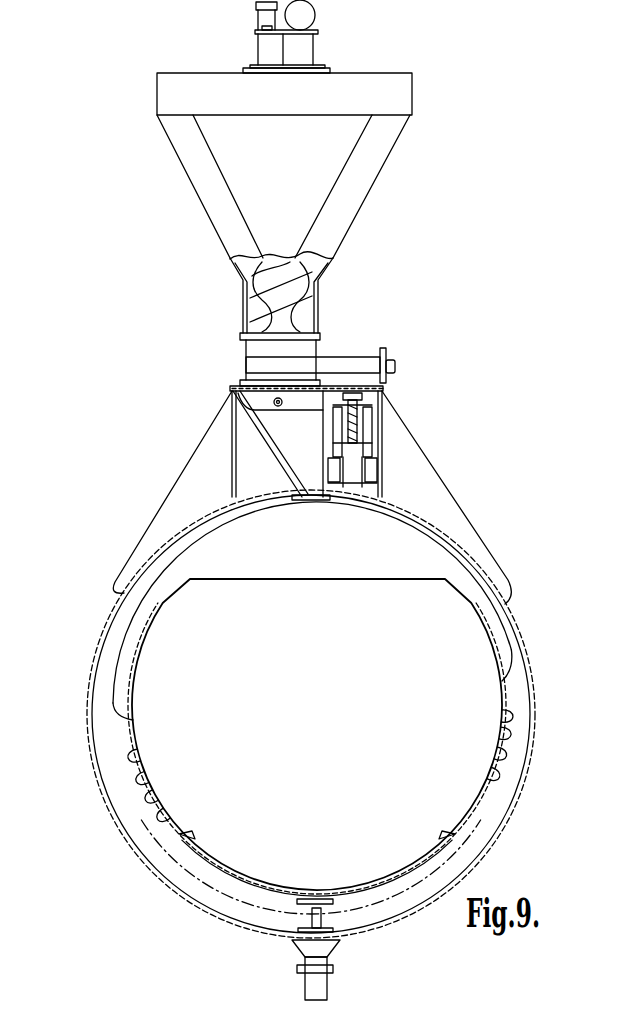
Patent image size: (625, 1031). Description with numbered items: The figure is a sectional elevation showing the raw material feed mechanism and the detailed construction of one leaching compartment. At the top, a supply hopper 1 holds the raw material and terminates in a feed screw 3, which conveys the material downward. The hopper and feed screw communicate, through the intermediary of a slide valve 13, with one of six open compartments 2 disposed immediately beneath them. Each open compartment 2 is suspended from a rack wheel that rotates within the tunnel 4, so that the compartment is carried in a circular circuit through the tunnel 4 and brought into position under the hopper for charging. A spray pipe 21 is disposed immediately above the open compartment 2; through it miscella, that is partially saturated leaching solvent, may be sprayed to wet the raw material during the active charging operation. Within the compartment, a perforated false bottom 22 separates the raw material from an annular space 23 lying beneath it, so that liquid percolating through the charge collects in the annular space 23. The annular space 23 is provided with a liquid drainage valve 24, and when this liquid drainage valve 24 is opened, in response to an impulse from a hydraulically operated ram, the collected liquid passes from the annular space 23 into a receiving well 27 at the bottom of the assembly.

The supply hopper 1 is at (365, 190).
The feed screw 3 is at (312, 318).
The slide valve 13 is at (246, 364).
The spray pipe 21 is at (283, 408).
The tunnel 4 is at (90, 678).
The open compartment 2 is at (490, 697).
The annular space 23 is at (237, 870).
The perforated false bottom 22 is at (294, 896).
The liquid drainage valve 24 is at (322, 919).
The receiving well 27 is at (333, 953).